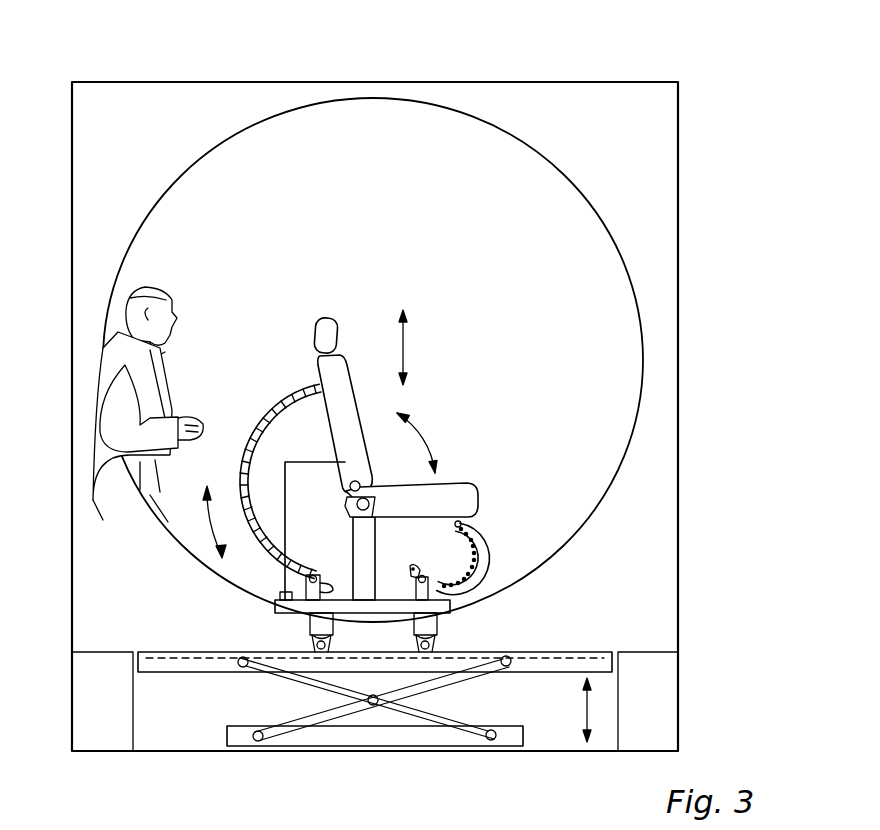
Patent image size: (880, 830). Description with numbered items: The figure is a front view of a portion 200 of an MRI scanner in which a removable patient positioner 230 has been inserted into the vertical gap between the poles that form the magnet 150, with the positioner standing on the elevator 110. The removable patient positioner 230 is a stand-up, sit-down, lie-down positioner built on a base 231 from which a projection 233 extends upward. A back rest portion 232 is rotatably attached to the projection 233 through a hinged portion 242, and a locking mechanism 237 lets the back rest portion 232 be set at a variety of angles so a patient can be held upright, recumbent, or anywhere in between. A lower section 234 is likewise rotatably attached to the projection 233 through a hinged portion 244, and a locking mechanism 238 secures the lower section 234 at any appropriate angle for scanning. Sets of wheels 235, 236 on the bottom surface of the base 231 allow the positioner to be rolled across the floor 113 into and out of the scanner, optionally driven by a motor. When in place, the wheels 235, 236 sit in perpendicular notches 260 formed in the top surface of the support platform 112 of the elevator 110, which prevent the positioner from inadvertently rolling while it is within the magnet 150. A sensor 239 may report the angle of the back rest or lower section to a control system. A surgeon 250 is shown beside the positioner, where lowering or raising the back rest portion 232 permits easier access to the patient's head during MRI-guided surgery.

The portion of an MRI scanner 200 is at (722, 47).
The magnet 150 is at (178, 187).
The elevator 110 is at (345, 746).
The support platform 112 is at (150, 652).
The floor 113 is at (660, 650).
The perpendicular notches 260 is at (207, 660).
The surgeon 250 is at (103, 349).
The removable patient positioner 230 is at (372, 412).
The base 231 is at (450, 605).
The back rest portion 232 is at (320, 370).
The projection 233 is at (370, 548).
The lower section 234 is at (447, 490).
The set of wheels 235 is at (312, 648).
The set of wheels 236 is at (437, 645).
The locking mechanism 237 is at (278, 408).
The locking mechanism 238 is at (457, 568).
The sensor 239 is at (303, 583).
The hinged portion 242 is at (350, 487).
The hinged portion 244 is at (355, 517).